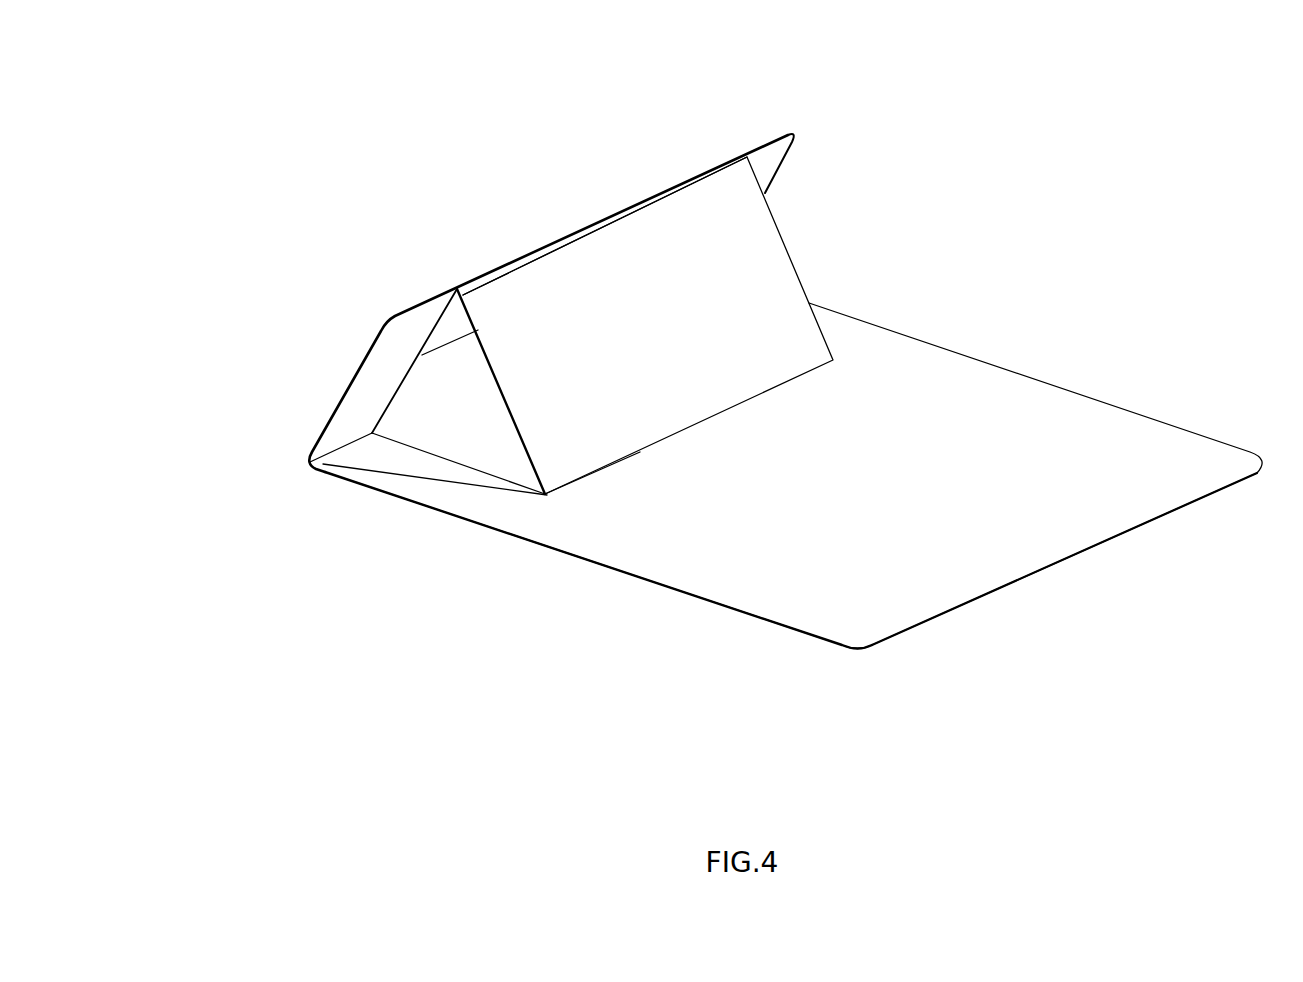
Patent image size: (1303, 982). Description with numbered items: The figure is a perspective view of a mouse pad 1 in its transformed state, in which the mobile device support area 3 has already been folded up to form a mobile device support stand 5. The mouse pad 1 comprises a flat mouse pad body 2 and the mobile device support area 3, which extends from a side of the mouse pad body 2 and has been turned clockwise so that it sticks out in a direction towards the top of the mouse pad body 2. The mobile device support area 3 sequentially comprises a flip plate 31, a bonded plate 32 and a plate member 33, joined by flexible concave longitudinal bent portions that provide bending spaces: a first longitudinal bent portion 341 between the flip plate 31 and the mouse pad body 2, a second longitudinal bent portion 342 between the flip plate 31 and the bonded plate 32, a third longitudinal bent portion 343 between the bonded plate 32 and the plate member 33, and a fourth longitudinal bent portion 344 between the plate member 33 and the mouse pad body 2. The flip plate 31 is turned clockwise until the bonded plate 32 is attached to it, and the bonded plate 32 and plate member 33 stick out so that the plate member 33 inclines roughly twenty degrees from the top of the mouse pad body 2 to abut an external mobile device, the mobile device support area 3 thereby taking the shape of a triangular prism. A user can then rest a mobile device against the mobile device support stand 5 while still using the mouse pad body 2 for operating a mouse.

The mouse pad 1 is at (223, 90).
The mouse pad body 2 is at (988, 405).
The mobile device support area 3 is at (297, 213).
The flip plate 31 is at (432, 311).
The bonded plate 32 is at (450, 328).
The plate member 33 is at (520, 387).
The first longitudinal bent portion 341 is at (322, 462).
The second longitudinal bent portion 342 is at (430, 387).
The third longitudinal bent portion 343 is at (682, 192).
The fourth longitudinal bent portion 344 is at (575, 520).
The mobile device support stand 5 is at (955, 172).